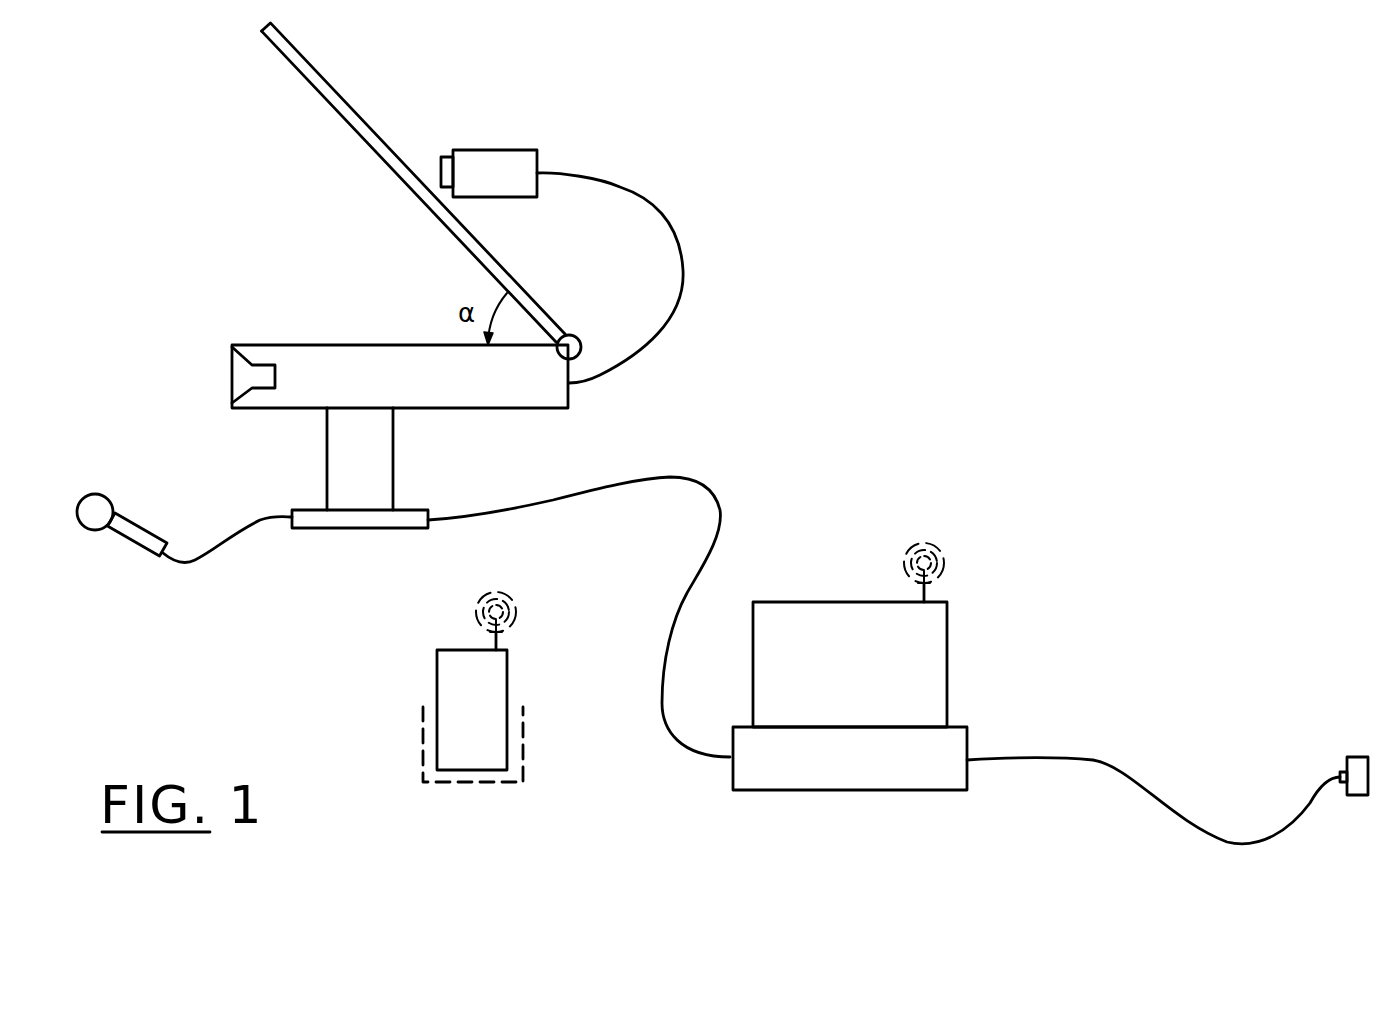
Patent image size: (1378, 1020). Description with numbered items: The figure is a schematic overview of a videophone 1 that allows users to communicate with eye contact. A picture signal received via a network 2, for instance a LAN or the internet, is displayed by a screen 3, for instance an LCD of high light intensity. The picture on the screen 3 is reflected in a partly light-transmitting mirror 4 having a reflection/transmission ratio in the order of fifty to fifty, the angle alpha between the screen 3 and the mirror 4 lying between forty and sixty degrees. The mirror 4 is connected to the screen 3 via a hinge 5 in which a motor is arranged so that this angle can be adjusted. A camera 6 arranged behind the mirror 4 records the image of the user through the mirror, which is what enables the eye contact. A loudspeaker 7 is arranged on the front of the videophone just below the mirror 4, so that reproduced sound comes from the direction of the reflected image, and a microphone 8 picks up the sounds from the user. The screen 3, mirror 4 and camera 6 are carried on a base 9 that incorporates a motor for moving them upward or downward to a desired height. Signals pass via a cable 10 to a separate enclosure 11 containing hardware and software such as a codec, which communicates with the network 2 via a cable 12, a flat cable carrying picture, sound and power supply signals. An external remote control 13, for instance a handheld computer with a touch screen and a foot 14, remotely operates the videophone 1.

The videophone 1 is at (848, 278).
The network 2 is at (1358, 760).
The screen 3 is at (302, 345).
The partly light-transmitting mirror 4 is at (318, 77).
The hinge 5 is at (576, 347).
The camera 6 is at (513, 158).
The loudspeaker 7 is at (247, 376).
The microphone 8 is at (128, 537).
The base 9 is at (383, 467).
The cable 10 is at (710, 482).
The enclosure 11 is at (935, 677).
The cable 12 is at (1093, 758).
The external remote control 13 is at (445, 663).
The foot 14 is at (525, 775).